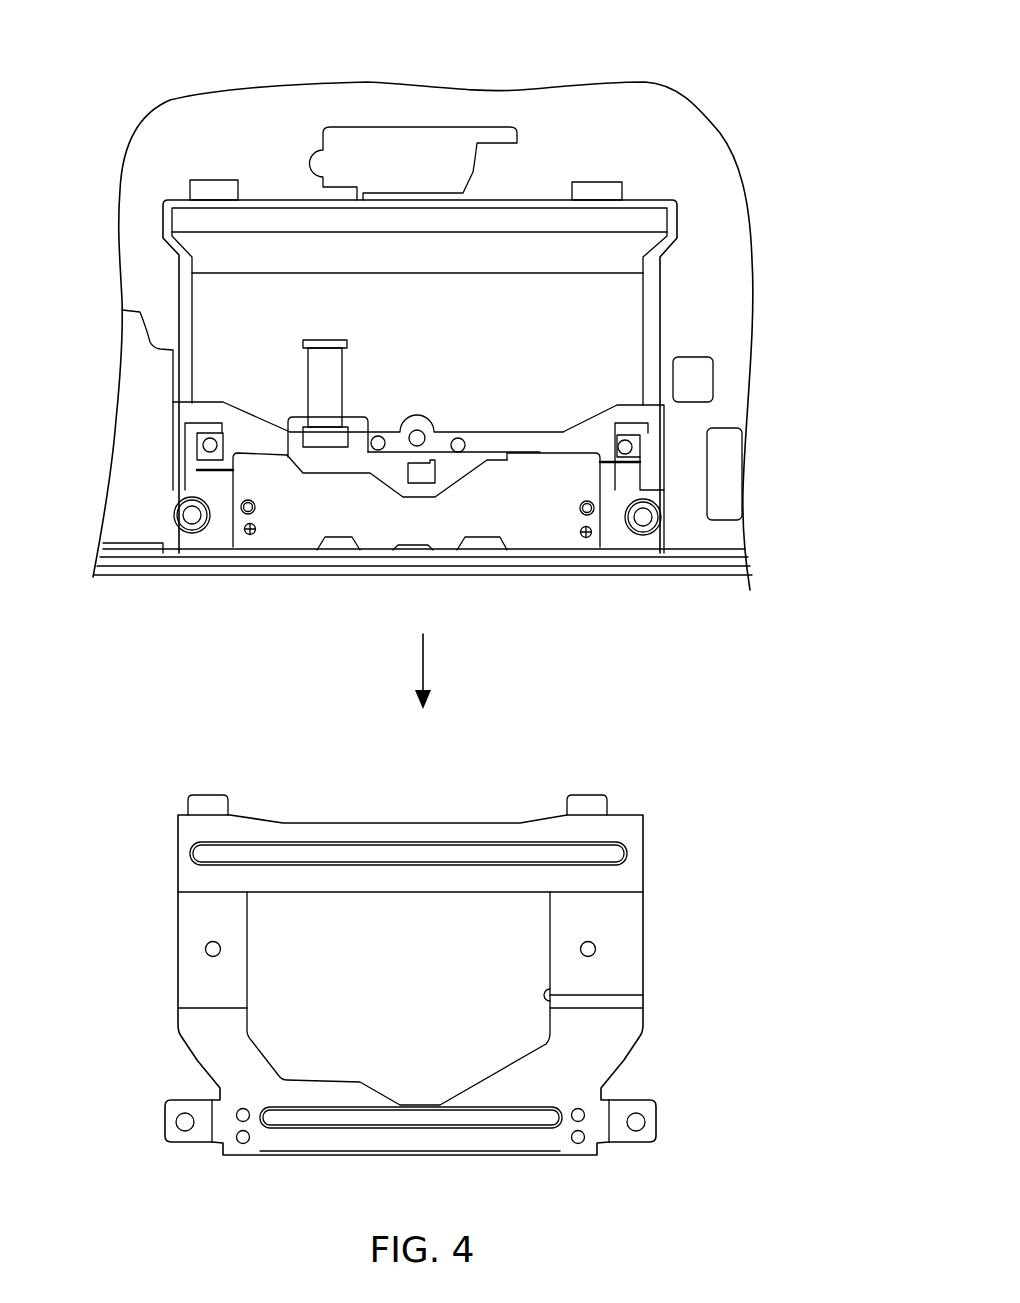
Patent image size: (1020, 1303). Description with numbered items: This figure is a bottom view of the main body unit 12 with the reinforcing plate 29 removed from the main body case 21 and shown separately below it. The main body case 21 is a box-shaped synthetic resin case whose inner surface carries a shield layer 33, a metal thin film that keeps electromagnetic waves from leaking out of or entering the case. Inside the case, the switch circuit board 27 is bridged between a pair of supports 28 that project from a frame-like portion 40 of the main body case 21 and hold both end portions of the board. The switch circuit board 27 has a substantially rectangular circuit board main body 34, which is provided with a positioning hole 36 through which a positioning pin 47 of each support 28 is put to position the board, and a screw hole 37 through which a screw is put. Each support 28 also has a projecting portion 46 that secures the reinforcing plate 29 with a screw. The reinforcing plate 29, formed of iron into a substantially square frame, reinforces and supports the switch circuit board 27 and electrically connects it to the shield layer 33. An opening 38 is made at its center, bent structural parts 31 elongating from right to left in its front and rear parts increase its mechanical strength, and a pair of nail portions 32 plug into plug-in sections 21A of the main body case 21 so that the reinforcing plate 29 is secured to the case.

The main body unit 12 is at (724, 60).
The main body case 21 is at (647, 82).
The plug-in sections 21A is at (218, 180).
The shield layer 33 is at (730, 184).
The switch circuit board 27 is at (473, 462).
The supports 28 is at (207, 546).
The positioning hole 36 is at (248, 536).
The projecting portion 46 is at (174, 492).
The screw hole 37 is at (250, 499).
The positioning pin 47 is at (258, 524).
The circuit board main body 34 is at (527, 530).
The frame-like portion 40 is at (728, 556).
The reinforcing plate 29 is at (497, 821).
The nail portions 32 is at (208, 795).
The bent structural parts 31 is at (612, 842).
The opening 38 is at (552, 995).